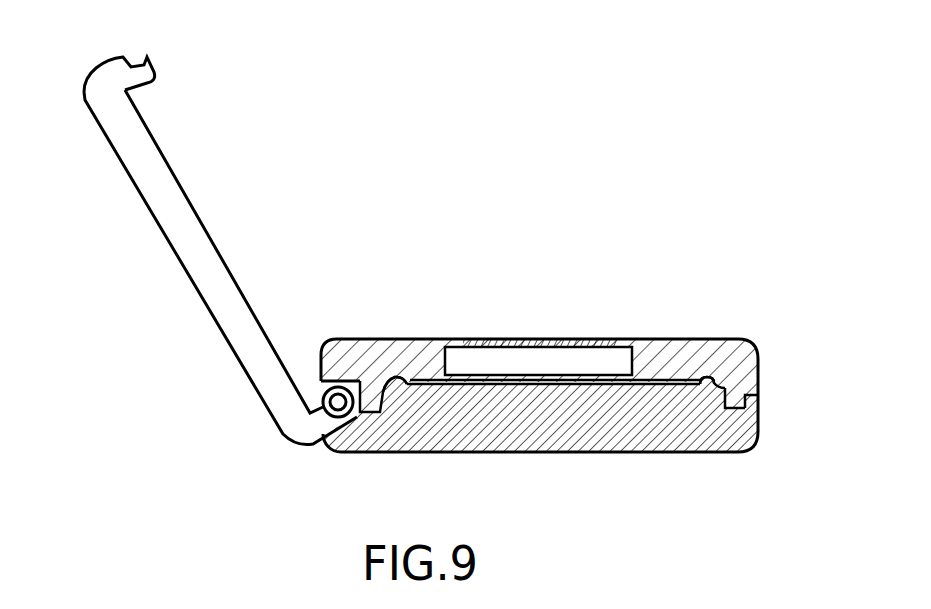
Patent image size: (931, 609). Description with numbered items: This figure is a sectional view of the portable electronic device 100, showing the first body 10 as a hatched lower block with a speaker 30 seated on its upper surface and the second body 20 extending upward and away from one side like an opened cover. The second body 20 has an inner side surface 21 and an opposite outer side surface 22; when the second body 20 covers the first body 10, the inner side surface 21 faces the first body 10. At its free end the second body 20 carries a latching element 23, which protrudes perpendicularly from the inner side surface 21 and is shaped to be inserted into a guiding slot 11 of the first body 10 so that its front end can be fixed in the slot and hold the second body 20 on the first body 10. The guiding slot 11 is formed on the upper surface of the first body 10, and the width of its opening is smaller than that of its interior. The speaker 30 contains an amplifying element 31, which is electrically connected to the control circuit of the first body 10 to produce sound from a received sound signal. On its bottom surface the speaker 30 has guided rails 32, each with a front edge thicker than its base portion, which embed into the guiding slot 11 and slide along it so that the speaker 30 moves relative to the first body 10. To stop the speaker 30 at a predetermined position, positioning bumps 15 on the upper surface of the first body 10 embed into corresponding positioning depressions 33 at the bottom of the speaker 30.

The portable electronic device 100 is at (438, 270).
The first body 10 is at (574, 418).
The guiding slot 11 is at (748, 406).
The positioning bump 15 is at (412, 384).
The second body 20 is at (196, 222).
The inner side surface 21 is at (160, 160).
The outer side surface 22 is at (137, 197).
The latching element 23 is at (144, 63).
The speaker 30 is at (581, 326).
The amplifying element 31 is at (555, 362).
The guided rail 32 is at (763, 396).
The positioning depression 33 is at (396, 376).